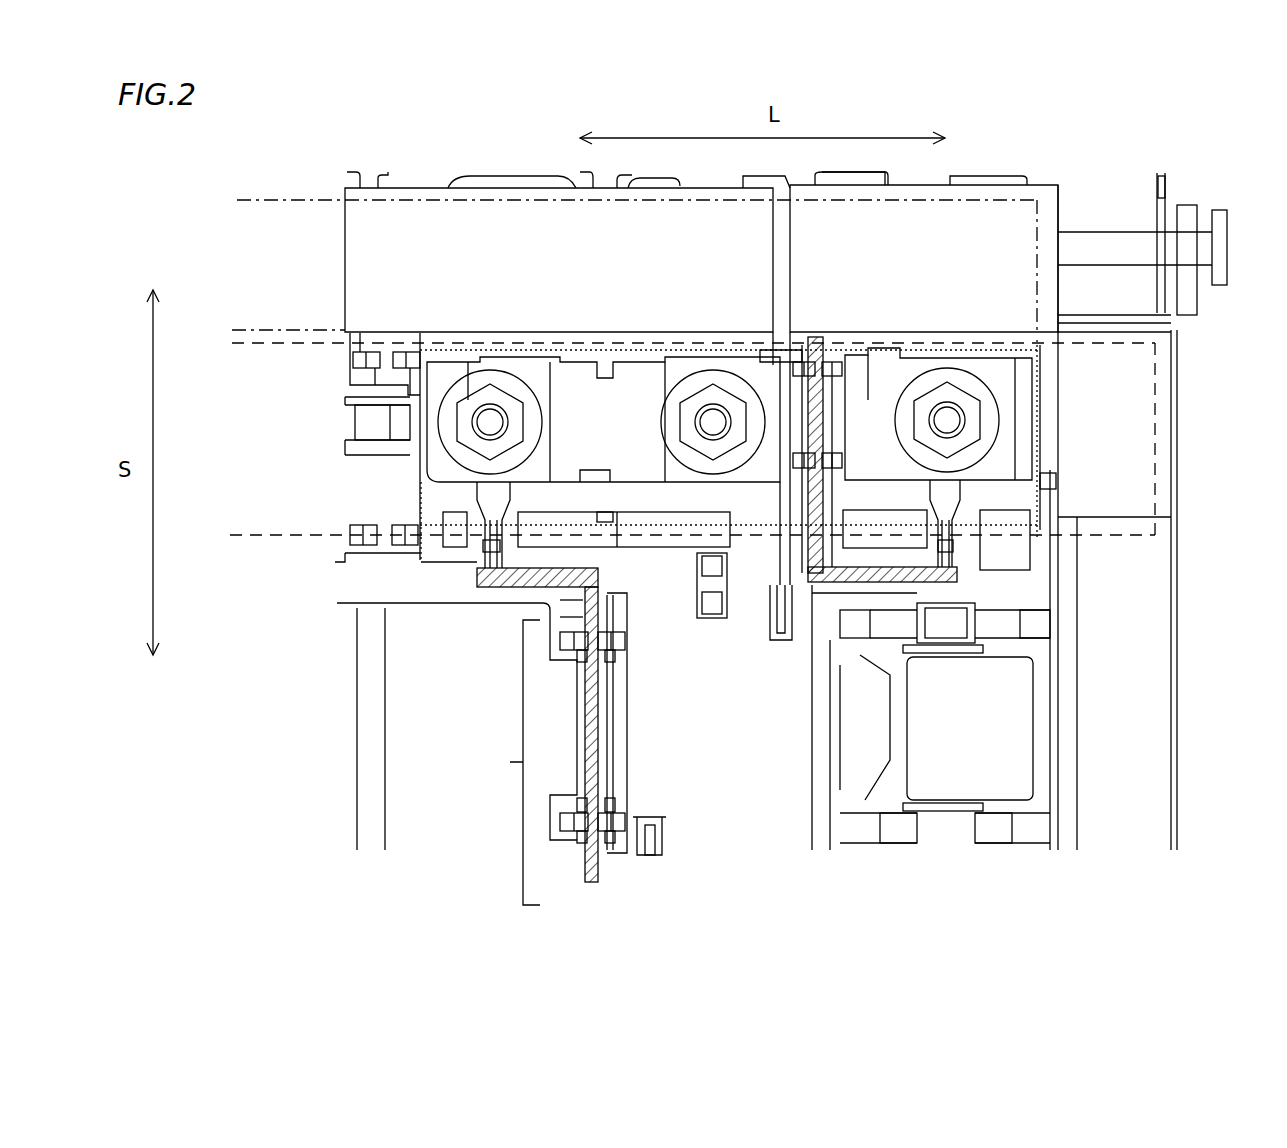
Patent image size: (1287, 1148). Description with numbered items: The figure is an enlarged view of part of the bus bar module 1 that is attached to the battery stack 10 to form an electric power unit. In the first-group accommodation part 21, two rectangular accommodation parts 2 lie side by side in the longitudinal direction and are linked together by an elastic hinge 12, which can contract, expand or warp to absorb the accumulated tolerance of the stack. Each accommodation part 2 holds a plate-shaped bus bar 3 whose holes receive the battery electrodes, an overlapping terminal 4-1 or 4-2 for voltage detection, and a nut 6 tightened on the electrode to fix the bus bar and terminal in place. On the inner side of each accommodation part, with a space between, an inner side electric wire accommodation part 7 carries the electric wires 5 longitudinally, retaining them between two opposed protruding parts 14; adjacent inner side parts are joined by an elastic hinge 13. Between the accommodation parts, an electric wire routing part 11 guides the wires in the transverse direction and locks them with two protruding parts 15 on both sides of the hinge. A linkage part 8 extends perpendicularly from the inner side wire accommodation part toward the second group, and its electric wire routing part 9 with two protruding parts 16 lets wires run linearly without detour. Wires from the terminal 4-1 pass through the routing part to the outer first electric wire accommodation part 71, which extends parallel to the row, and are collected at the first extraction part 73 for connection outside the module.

The bus bar module 1 is at (427, 822).
The accommodation part 2 is at (395, 425).
The bus bar 3 is at (623, 383).
The terminal 4-1 is at (898, 370).
The terminal 4-2 is at (450, 377).
The electric wire 5 is at (517, 587).
The nut 6 is at (490, 402).
The inner side electric wire accommodation part 7 is at (353, 590).
The linkage part 8 is at (512, 762).
The electric wire routing part 9 is at (617, 733).
The battery stack 10 is at (467, 178).
The electric wire routing part 11 is at (385, 327).
The hinge 12 is at (358, 428).
The hinge 13 is at (655, 817).
The protruding part 14 is at (703, 615).
The protruding part 15 is at (400, 357).
The protruding part 16 is at (580, 648).
The first-group accommodation part 21 is at (1157, 343).
The first electric wire accommodation part 71 is at (1040, 196).
The first extraction part 73 is at (1222, 228).